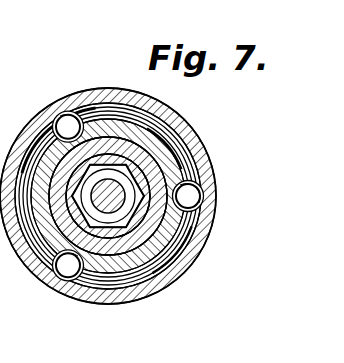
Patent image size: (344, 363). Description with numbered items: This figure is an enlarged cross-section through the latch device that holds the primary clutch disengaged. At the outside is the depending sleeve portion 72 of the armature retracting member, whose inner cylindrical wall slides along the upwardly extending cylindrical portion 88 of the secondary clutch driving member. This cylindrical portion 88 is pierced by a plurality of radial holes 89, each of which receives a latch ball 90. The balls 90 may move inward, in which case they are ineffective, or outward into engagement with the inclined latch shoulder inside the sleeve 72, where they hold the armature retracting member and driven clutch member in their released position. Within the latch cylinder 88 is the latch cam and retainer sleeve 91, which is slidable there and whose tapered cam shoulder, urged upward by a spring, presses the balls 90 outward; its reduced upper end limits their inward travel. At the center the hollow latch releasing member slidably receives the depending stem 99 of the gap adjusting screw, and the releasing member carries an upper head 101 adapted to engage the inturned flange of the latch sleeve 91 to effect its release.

The depending sleeve portion 72 is at (163, 142).
The cylindrical portion 88 is at (181, 272).
The radial holes 89 is at (170, 178).
The latch balls 90 is at (65, 124).
The latch cam and retainer sleeve 91 is at (141, 242).
The depending stem 99 is at (118, 187).
The upper head 101 is at (129, 212).